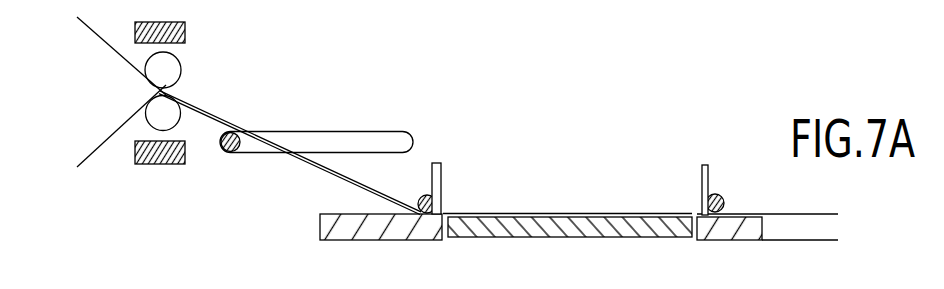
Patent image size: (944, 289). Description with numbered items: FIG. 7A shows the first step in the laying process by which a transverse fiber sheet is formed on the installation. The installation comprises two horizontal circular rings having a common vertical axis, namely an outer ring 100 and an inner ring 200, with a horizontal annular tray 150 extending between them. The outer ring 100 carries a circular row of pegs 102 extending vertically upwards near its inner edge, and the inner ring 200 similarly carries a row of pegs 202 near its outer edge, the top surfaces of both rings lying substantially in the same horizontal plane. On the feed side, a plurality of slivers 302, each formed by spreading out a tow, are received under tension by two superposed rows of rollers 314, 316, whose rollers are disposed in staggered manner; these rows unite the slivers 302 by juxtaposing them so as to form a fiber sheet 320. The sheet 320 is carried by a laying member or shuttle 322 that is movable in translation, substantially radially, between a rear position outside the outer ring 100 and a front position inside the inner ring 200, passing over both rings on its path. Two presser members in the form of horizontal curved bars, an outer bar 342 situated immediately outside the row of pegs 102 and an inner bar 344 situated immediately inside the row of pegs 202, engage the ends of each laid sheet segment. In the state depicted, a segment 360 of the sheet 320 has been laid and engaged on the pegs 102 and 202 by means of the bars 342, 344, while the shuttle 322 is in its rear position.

The slivers 302 is at (115, 132).
The row of rollers 314 is at (172, 72).
The row of rollers 316 is at (163, 113).
The fiber sheet 320 is at (311, 166).
The shuttle 322 is at (368, 142).
The outer presser member 342 is at (422, 195).
The pegs 102 is at (438, 170).
The outer ring 100 is at (332, 232).
The annular tray 150 is at (542, 232).
The sheet segment 360 is at (620, 213).
The inner ring 200 is at (752, 222).
The inner presser member 344 is at (718, 197).
The pegs 202 is at (702, 177).